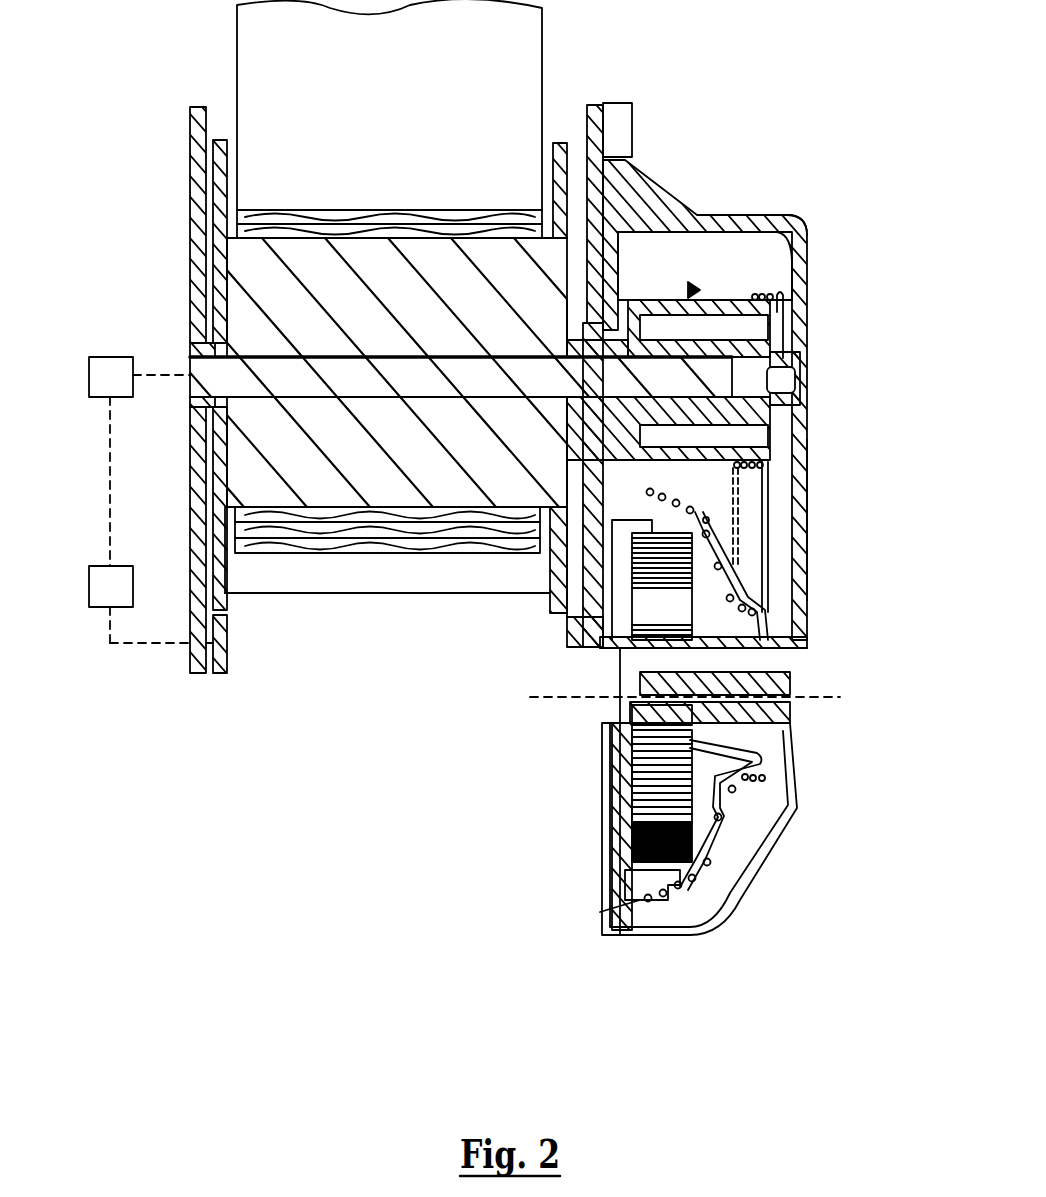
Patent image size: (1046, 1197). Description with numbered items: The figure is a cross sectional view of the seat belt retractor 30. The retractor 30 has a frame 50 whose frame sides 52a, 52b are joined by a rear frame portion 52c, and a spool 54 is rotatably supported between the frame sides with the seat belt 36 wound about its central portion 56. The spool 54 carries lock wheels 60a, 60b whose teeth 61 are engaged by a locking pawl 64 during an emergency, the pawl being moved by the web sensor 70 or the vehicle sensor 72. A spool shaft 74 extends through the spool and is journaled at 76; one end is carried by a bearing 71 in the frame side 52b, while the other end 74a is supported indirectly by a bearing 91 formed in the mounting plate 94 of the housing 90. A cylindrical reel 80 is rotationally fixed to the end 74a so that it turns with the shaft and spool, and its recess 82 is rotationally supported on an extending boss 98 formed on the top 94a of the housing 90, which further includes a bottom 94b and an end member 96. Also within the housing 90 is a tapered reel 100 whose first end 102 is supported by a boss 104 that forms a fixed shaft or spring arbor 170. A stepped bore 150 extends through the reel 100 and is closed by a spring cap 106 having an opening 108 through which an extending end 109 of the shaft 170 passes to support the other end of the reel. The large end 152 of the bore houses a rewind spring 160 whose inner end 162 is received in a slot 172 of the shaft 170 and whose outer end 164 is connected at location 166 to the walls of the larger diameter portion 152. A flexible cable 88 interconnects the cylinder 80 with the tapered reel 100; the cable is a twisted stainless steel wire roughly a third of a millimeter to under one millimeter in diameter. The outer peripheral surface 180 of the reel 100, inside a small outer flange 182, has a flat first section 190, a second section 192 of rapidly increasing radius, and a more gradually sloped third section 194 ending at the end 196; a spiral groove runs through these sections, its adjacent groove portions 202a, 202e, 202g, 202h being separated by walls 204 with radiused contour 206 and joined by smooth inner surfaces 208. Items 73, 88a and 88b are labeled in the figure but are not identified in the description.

The seat belt retractor 30 is at (612, 48).
The seat belt 36 is at (392, 108).
The frame 50 is at (186, 160).
The frame side 52a is at (208, 222).
The frame side 52b is at (595, 128).
The rear frame portion 52c is at (405, 580).
The spool 54 is at (342, 451).
The central portion 56 is at (325, 490).
The lock wheel 60a is at (222, 600).
The lock wheel 60b is at (552, 594).
The teeth 61 is at (222, 618).
The locking pawl 64 is at (218, 632).
The web sensor 70 is at (139, 461).
The bearing 71 is at (192, 345).
The vehicle sensor 72 is at (139, 604).
The lower shaft seal 73 is at (192, 402).
The spool shaft 74 is at (420, 374).
The shaft end 74a is at (653, 300).
The journal 76 is at (440, 356).
The cylindrical reel 80 is at (705, 266).
The recess 82 is at (792, 356).
The flexible cable 88 is at (768, 495).
The upper spring 88a is at (648, 485).
The spring end 88b is at (758, 295).
The housing 90 is at (750, 205).
The bearing 91 is at (578, 330).
The mounting plate 94 is at (610, 205).
The top 94a is at (772, 222).
The bottom 94b is at (695, 925).
The end plate 96 is at (800, 543).
The extending boss 98 is at (792, 398).
The tapered reel 100 is at (735, 792).
The first end 102 is at (800, 642).
The boss 104 is at (790, 652).
The spring cap 106 is at (614, 770).
The opening 108 is at (614, 745).
The extending end 109 is at (620, 697).
The stepped bore 150 is at (760, 752).
The large end 152 is at (628, 880).
The rewind spring 160 is at (630, 820).
The inner end 162 is at (640, 660).
The outer end 164 is at (630, 840).
The connection location 166 is at (630, 852).
The fixed shaft 170 is at (662, 672).
The spring attachment slot 172 is at (700, 702).
The outer peripheral surface 180 is at (738, 858).
The outer flange 182 is at (772, 610).
The first section 190 is at (770, 776).
The second section 192 is at (722, 820).
The third section 194 is at (660, 900).
The end 196 is at (650, 900).
The groove portion 202a is at (748, 780).
The groove portion 202e is at (708, 522).
The groove portion 202g is at (680, 888).
The groove portion 202h is at (668, 896).
The wall 204 is at (700, 870).
The radiused contour 206 is at (722, 850).
The inner surface 208 is at (712, 820).